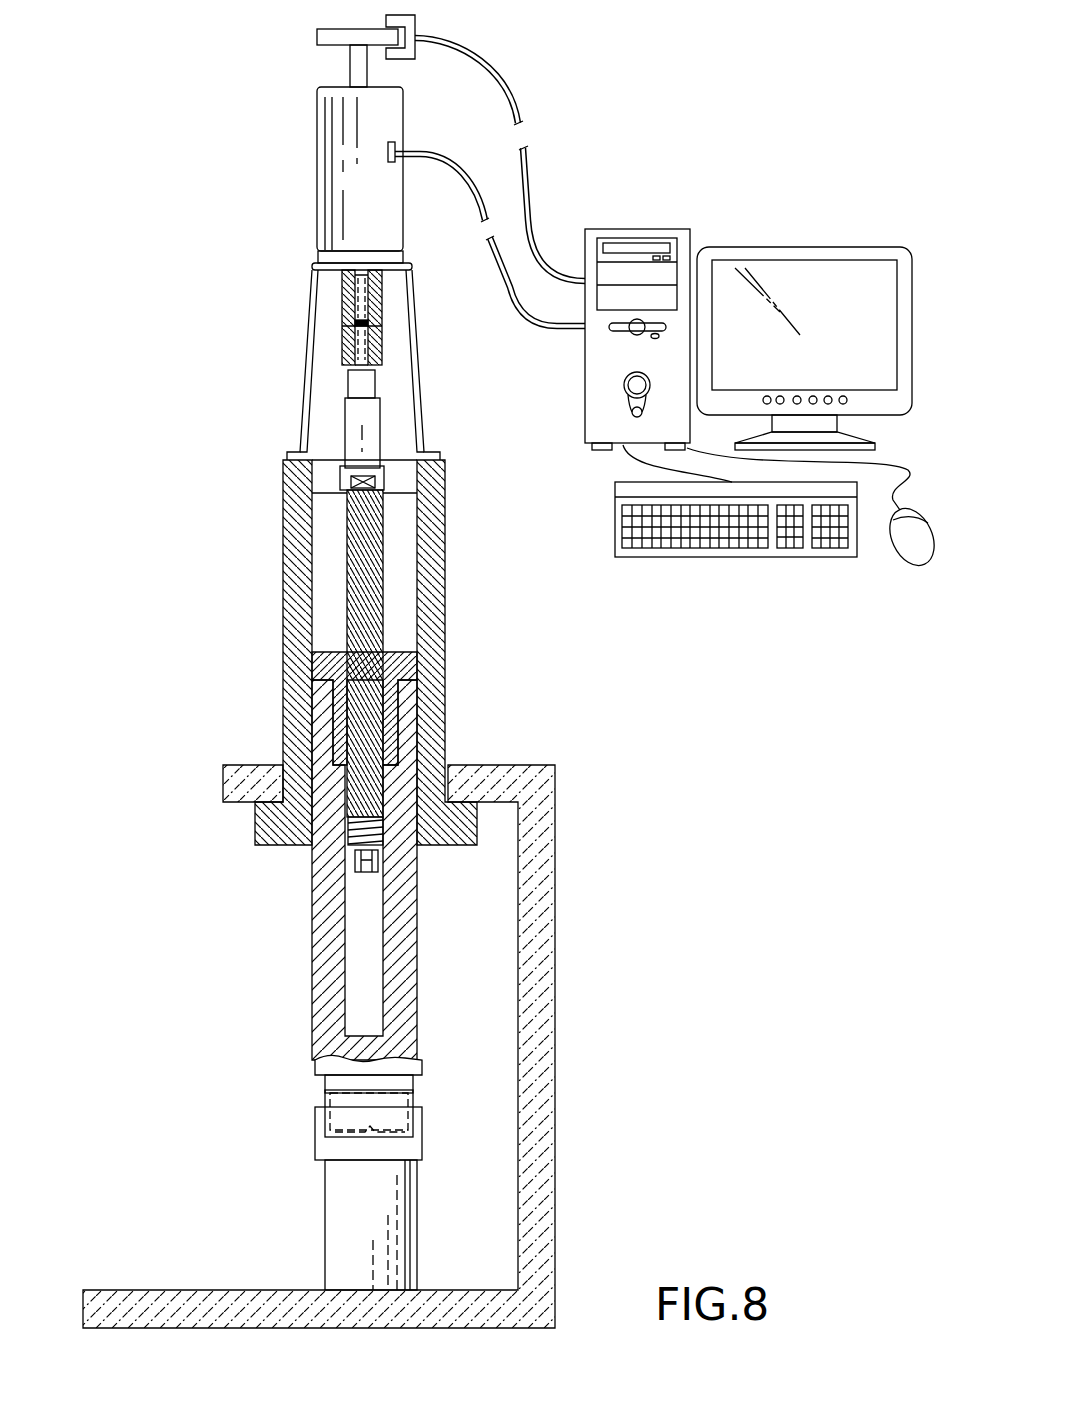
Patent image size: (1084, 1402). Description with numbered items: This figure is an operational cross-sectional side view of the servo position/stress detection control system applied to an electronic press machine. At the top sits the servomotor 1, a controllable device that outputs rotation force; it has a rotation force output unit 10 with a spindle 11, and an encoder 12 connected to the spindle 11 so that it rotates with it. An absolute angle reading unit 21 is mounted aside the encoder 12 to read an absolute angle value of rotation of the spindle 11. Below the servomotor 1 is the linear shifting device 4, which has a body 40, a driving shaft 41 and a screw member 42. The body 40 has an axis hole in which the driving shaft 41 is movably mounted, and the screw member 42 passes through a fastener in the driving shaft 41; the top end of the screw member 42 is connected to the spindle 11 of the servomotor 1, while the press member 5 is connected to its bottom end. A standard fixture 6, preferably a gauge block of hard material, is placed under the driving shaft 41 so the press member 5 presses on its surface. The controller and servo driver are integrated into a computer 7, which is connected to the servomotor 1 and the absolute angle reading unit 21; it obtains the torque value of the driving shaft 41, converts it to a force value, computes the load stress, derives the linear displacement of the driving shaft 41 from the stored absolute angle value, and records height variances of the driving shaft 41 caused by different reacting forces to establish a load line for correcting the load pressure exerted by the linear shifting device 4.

The servomotor 1 is at (365, 132).
The rotation force output unit 10 is at (342, 200).
The spindle 11 is at (358, 310).
The encoder 12 is at (335, 44).
The absolute angle reading unit 21 is at (416, 25).
The linear shifting device 4 is at (373, 748).
The body 40 is at (430, 647).
The driving shaft 41 is at (333, 920).
The screw member 42 is at (358, 597).
The press member 5 is at (333, 1152).
The standard fixture 6 is at (353, 1222).
The computer 7 is at (716, 209).